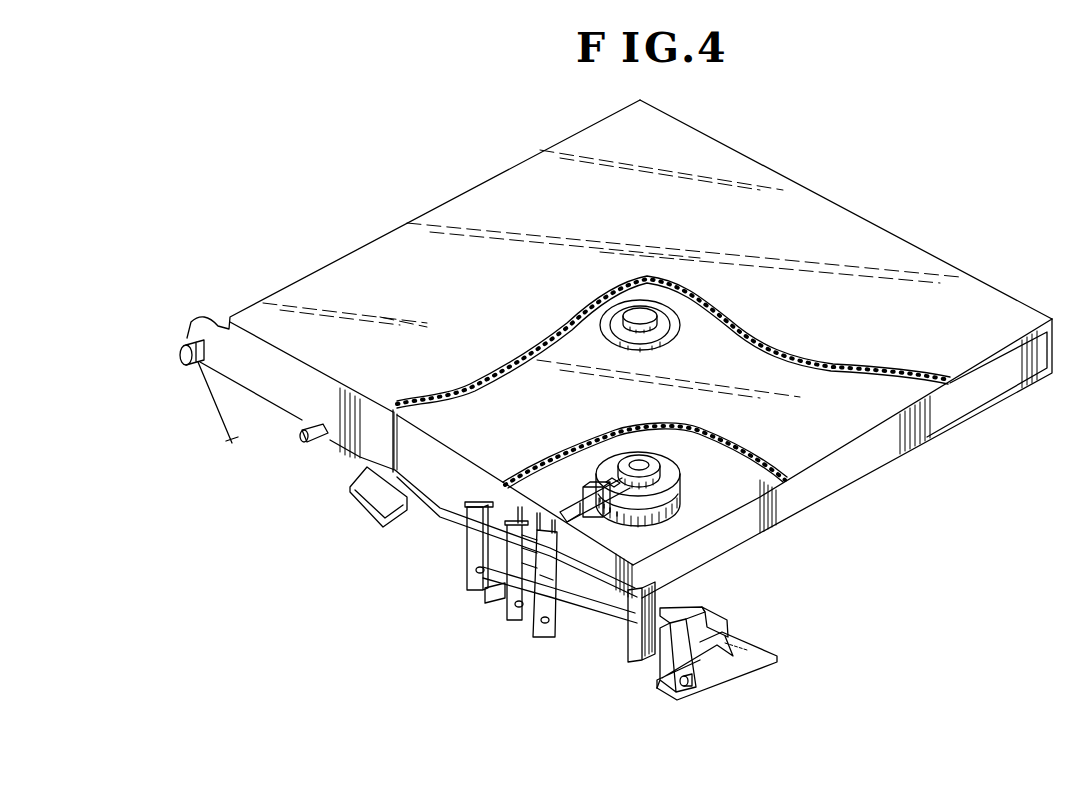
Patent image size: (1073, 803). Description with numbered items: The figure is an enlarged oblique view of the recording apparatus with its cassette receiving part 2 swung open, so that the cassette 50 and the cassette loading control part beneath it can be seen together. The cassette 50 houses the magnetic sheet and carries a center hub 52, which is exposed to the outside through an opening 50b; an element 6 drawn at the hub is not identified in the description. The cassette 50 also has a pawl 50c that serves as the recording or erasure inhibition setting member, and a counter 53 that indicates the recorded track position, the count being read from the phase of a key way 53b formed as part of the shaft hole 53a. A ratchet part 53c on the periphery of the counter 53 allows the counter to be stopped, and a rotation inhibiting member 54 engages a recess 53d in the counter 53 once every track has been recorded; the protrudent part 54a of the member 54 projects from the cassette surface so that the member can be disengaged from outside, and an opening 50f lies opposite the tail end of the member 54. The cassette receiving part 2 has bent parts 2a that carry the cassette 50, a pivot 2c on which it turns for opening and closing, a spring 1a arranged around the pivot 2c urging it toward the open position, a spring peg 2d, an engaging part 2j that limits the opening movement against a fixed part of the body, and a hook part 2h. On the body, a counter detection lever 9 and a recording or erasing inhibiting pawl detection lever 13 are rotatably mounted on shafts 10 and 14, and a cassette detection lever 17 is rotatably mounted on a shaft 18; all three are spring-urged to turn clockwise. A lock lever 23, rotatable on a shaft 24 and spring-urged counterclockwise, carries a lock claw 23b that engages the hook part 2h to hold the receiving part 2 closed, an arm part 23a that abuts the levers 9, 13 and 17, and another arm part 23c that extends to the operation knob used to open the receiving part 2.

The cassette receiving part 2 is at (980, 302).
The bent parts 2a is at (968, 420).
The pivot 2c is at (190, 362).
The spring peg 2d is at (305, 443).
The hook part 2h is at (648, 660).
The engaging part 2j is at (372, 500).
The spring 1a is at (220, 418).
The reel support 6 is at (645, 318).
The center hub 52 is at (662, 322).
The cassette 50 is at (1005, 382).
The opening 50b is at (680, 313).
The pawl 50c is at (470, 495).
The opening 50f is at (600, 560).
The counter 53 is at (690, 522).
The shaft hole 53a is at (645, 460).
The key way 53b is at (638, 463).
The ratchet part 53c is at (683, 500).
The recess 53d is at (608, 482).
The rotation inhibiting member 54 is at (563, 517).
The protrudent part 54a is at (590, 482).
The counter detection lever 9 is at (563, 632).
The shaft 10 is at (546, 632).
The recording or erasing inhibiting pawl detection lever 13 is at (538, 625).
The shaft 14 is at (513, 606).
The cassette detection lever 17 is at (487, 594).
The shaft 18 is at (476, 570).
The lock lever 23 is at (683, 665).
The arm part 23a is at (753, 670).
The lock claw 23b is at (695, 610).
The arm part 23c is at (730, 622).
The shaft 24 is at (690, 684).